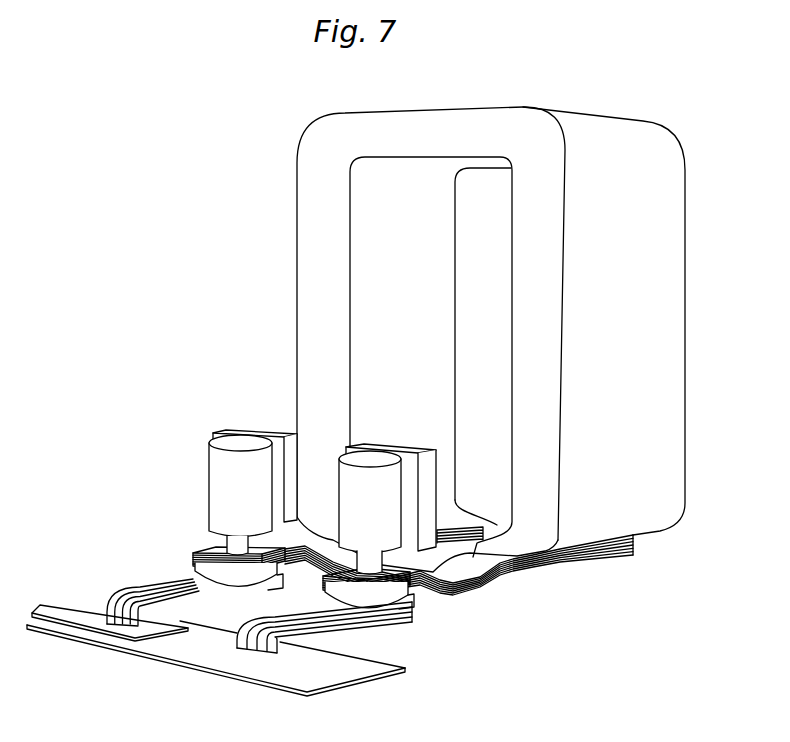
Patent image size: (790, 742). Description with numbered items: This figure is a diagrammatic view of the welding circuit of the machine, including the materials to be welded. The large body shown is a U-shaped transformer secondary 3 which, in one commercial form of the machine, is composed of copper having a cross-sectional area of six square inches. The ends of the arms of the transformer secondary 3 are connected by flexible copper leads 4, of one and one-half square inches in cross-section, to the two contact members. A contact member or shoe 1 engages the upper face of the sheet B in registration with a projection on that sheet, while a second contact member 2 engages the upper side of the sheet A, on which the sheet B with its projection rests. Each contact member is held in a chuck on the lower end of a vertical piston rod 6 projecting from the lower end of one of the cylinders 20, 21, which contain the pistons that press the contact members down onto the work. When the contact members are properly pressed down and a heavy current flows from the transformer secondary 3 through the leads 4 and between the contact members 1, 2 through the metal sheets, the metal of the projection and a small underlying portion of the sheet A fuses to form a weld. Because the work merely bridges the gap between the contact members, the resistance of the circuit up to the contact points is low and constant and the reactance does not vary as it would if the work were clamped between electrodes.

The contact member or shoe 1 is at (173, 582).
The second contact member 2 is at (345, 618).
The U-shaped transformer secondary 3 is at (686, 354).
The flexible copper leads 4 is at (310, 567).
The vertical piston rod 6 is at (200, 548).
The cylinder 20 is at (253, 492).
The cylinder 21 is at (387, 509).
The sheet A is at (185, 655).
The sheet B is at (73, 603).